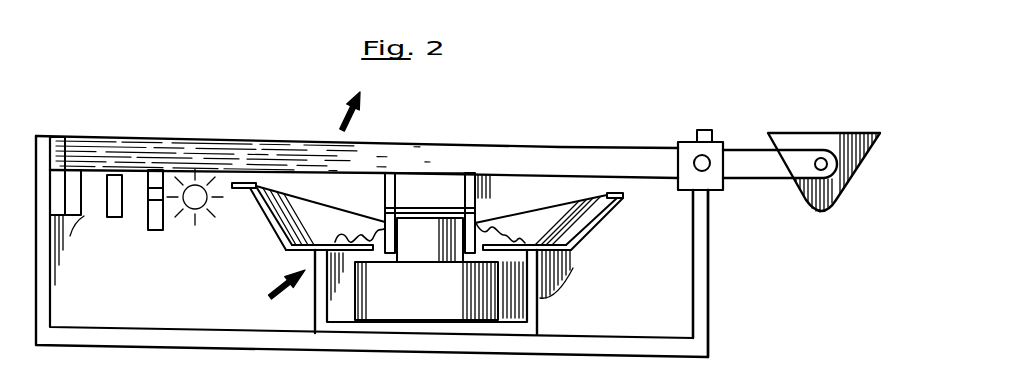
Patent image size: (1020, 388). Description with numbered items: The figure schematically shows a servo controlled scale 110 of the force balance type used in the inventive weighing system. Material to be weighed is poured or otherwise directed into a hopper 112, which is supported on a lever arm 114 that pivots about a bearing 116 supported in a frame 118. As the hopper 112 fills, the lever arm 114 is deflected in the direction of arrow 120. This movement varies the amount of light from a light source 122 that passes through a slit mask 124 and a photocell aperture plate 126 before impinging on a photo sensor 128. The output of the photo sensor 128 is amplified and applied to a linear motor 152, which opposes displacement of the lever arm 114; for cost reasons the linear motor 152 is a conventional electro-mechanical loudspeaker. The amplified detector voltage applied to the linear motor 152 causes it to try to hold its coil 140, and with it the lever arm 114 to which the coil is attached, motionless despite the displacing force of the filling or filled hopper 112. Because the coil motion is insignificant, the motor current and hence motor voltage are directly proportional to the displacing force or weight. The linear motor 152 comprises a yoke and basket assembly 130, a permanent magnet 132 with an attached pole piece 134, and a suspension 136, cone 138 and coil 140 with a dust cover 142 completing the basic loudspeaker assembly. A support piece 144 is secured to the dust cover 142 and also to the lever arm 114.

The servo controlled scale 110 is at (727, 310).
The hopper 112 is at (835, 202).
The lever arm 114 is at (746, 150).
The bearing 116 is at (696, 158).
The frame 118 is at (711, 211).
The arrow 120 is at (332, 111).
The light source 122 is at (214, 208).
The slit mask 124 is at (165, 229).
The photocell aperture plate 126 is at (119, 217).
The photo sensor 128 is at (80, 218).
The yoke and basket assembly 130 is at (575, 253).
The permanent magnet 132 is at (428, 303).
The pole piece 134 is at (432, 251).
The suspension 136 is at (340, 228).
The cone 138 is at (567, 203).
The coil 140 is at (385, 216).
The dust cover 142 is at (440, 207).
The support piece 144 is at (480, 201).
The linear motor 152 is at (268, 287).